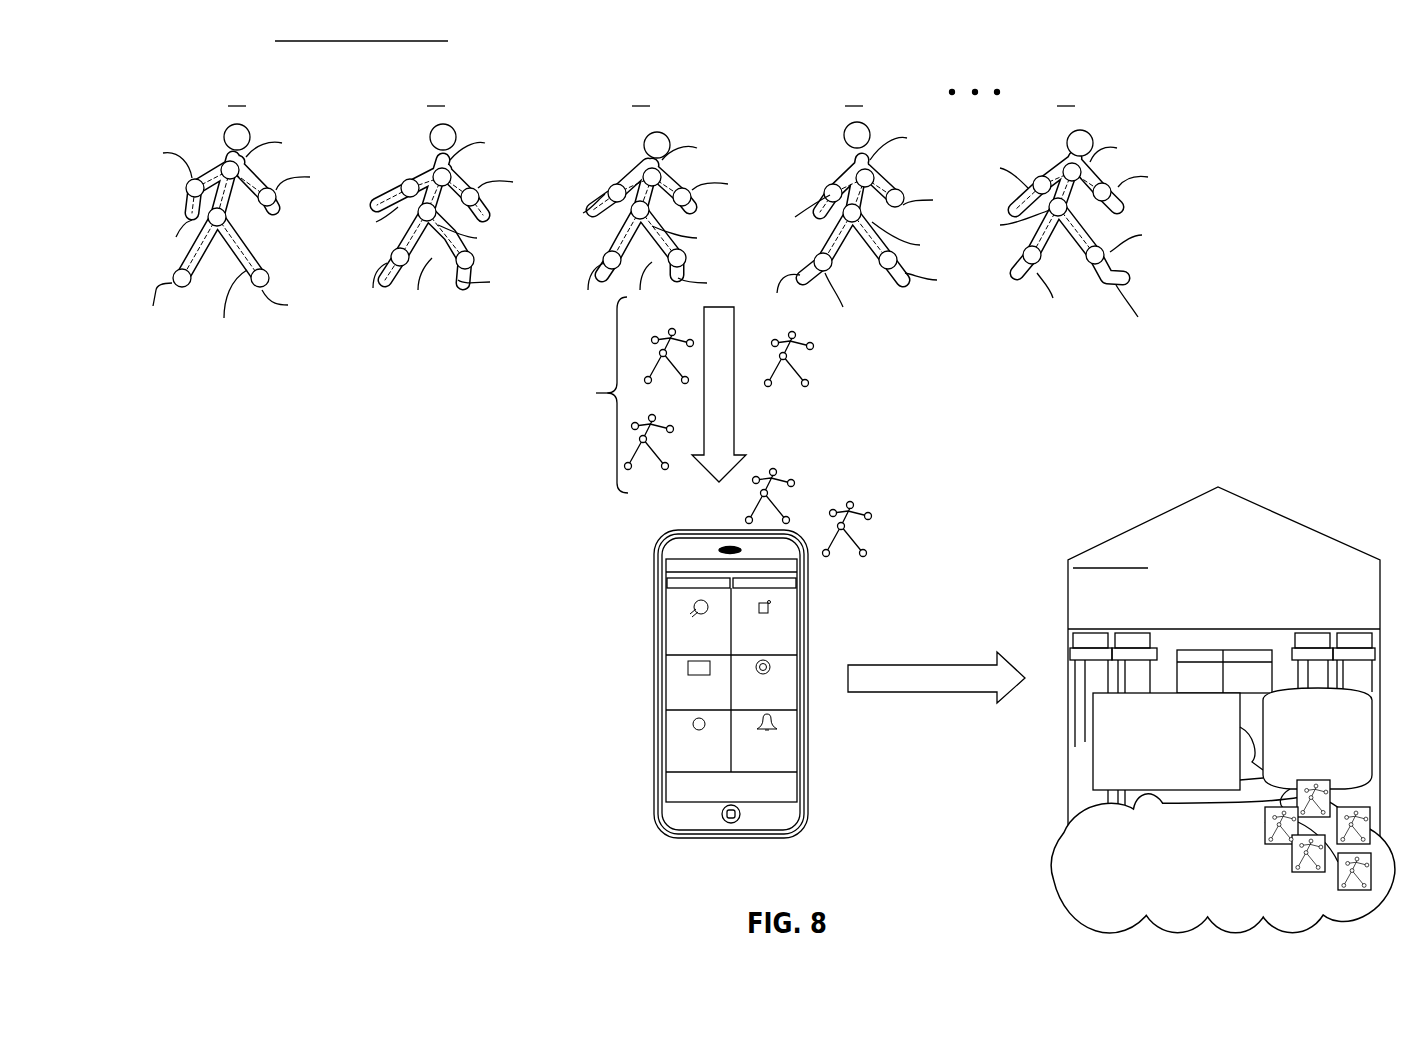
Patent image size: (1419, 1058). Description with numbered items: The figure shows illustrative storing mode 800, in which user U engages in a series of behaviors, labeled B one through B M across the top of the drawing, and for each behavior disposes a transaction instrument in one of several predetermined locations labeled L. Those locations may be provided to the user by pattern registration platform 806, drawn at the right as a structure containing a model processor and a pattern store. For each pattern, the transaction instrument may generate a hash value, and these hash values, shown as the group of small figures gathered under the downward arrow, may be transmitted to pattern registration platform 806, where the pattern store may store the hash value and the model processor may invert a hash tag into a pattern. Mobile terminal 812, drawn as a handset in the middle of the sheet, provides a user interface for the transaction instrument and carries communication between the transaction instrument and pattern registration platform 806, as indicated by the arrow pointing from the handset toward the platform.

The storing mode 800 is at (1295, 123).
The pattern registration platform 806 is at (1335, 540).
The mobile terminal 812 is at (650, 687).